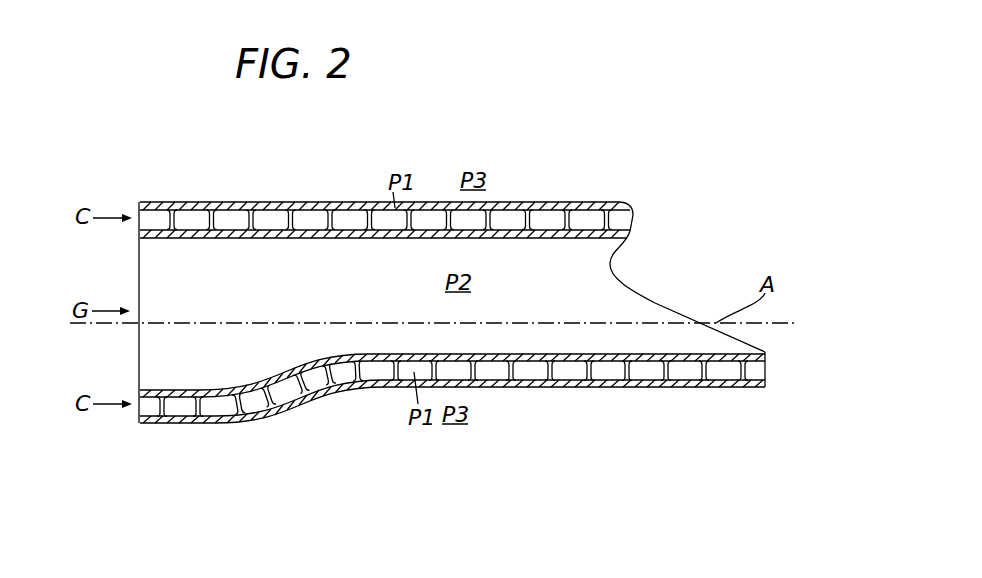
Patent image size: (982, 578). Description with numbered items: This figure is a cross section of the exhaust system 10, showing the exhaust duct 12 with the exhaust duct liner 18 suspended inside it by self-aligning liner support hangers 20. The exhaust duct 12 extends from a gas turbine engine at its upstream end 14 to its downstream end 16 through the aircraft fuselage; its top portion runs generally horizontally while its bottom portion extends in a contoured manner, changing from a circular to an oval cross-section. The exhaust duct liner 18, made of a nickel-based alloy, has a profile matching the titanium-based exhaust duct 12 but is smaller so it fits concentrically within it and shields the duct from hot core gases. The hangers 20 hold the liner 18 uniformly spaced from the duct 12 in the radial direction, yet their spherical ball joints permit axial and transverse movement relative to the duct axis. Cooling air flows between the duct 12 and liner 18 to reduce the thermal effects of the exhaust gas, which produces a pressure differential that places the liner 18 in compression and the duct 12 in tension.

The exhaust system 10 is at (674, 192).
The exhaust duct 12 is at (268, 202).
The upstream end 14 is at (146, 454).
The downstream end 16 is at (807, 320).
The exhaust duct liner 18 is at (187, 240).
The self-aligning liner support hangers 20 is at (262, 224).